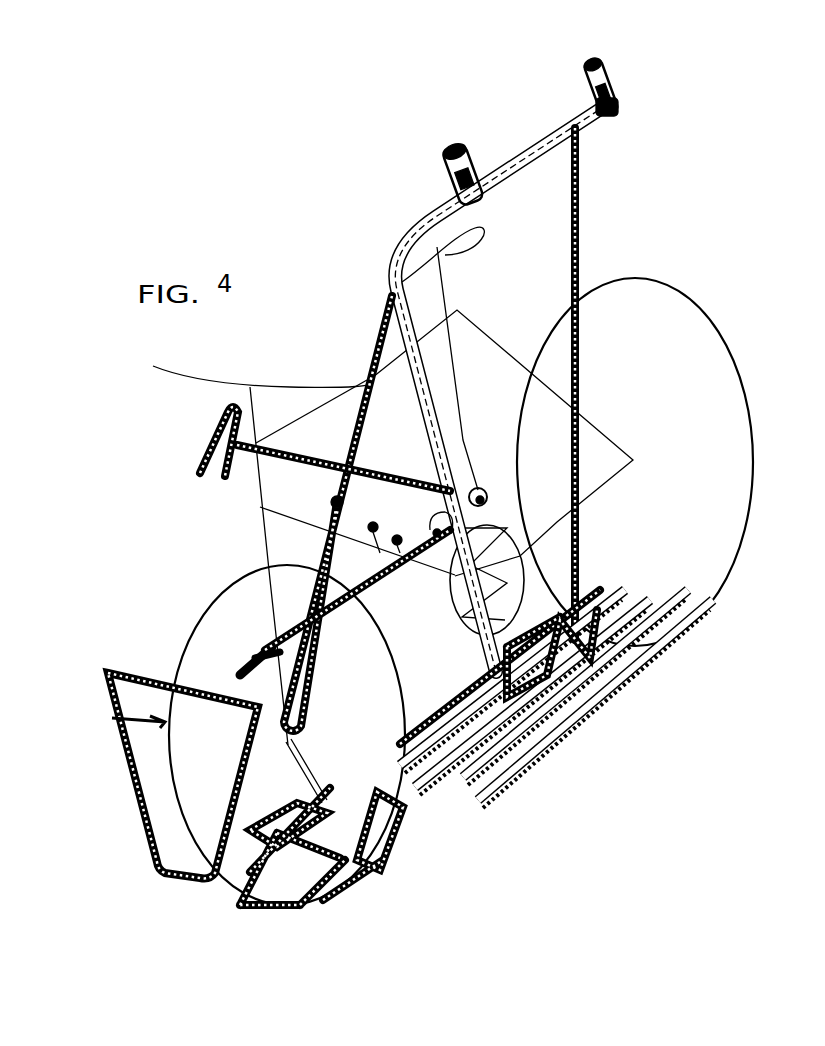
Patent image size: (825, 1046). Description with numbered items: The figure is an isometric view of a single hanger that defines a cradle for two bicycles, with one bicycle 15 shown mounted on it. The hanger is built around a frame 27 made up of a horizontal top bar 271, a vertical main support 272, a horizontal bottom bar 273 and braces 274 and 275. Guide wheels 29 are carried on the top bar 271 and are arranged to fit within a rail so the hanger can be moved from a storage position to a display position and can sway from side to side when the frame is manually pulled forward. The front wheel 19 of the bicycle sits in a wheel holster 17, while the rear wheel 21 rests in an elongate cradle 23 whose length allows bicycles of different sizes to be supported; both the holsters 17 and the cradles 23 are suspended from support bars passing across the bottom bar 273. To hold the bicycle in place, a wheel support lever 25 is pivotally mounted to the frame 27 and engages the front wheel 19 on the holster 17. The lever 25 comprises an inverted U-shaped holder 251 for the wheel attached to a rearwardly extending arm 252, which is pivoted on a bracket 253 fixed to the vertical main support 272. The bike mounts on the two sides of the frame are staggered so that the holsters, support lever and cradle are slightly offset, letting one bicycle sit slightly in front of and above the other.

The bicycle 15 is at (649, 442).
The wheel holster 17 is at (385, 885).
The front wheel 19 is at (185, 865).
The rear wheel 21 is at (745, 388).
The elongate cradle 23 is at (578, 718).
The wheel support lever 25 is at (319, 528).
The inverted U-shaped holder 251 is at (210, 446).
The rearwardly extending arm 252 is at (376, 466).
The bracket 253 is at (478, 487).
The frame 27 is at (506, 377).
The horizontal top bar 271 is at (528, 150).
The vertical main support 272 is at (470, 330).
The horizontal bottom bar 273 is at (410, 735).
The brace 274 is at (372, 381).
The brace 275 is at (580, 362).
The guide wheel 29 is at (445, 150).